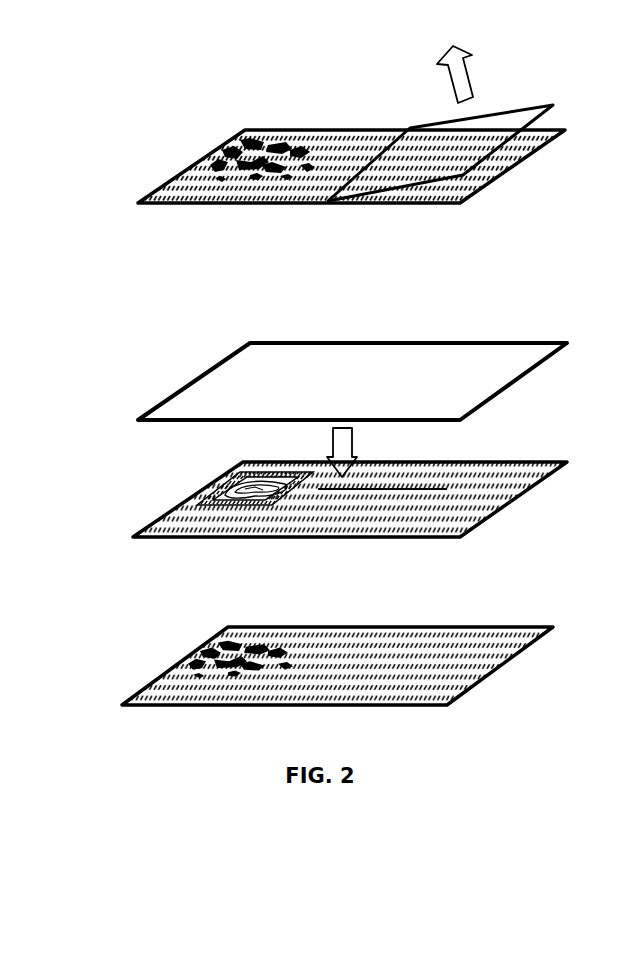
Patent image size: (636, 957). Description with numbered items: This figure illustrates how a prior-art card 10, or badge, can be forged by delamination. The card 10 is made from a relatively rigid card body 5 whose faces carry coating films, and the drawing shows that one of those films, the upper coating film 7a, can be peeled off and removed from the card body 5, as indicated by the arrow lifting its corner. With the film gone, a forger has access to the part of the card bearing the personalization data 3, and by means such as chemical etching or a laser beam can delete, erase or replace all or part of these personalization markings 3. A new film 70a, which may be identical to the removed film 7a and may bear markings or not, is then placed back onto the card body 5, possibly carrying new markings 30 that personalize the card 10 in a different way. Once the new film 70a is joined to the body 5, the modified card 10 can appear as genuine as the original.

The personalization data 3 is at (326, 164).
The card body 5 is at (423, 194).
The upper coating film 7a is at (525, 102).
The card 10 is at (473, 665).
The new markings 30 is at (335, 496).
The new film 70a is at (218, 378).